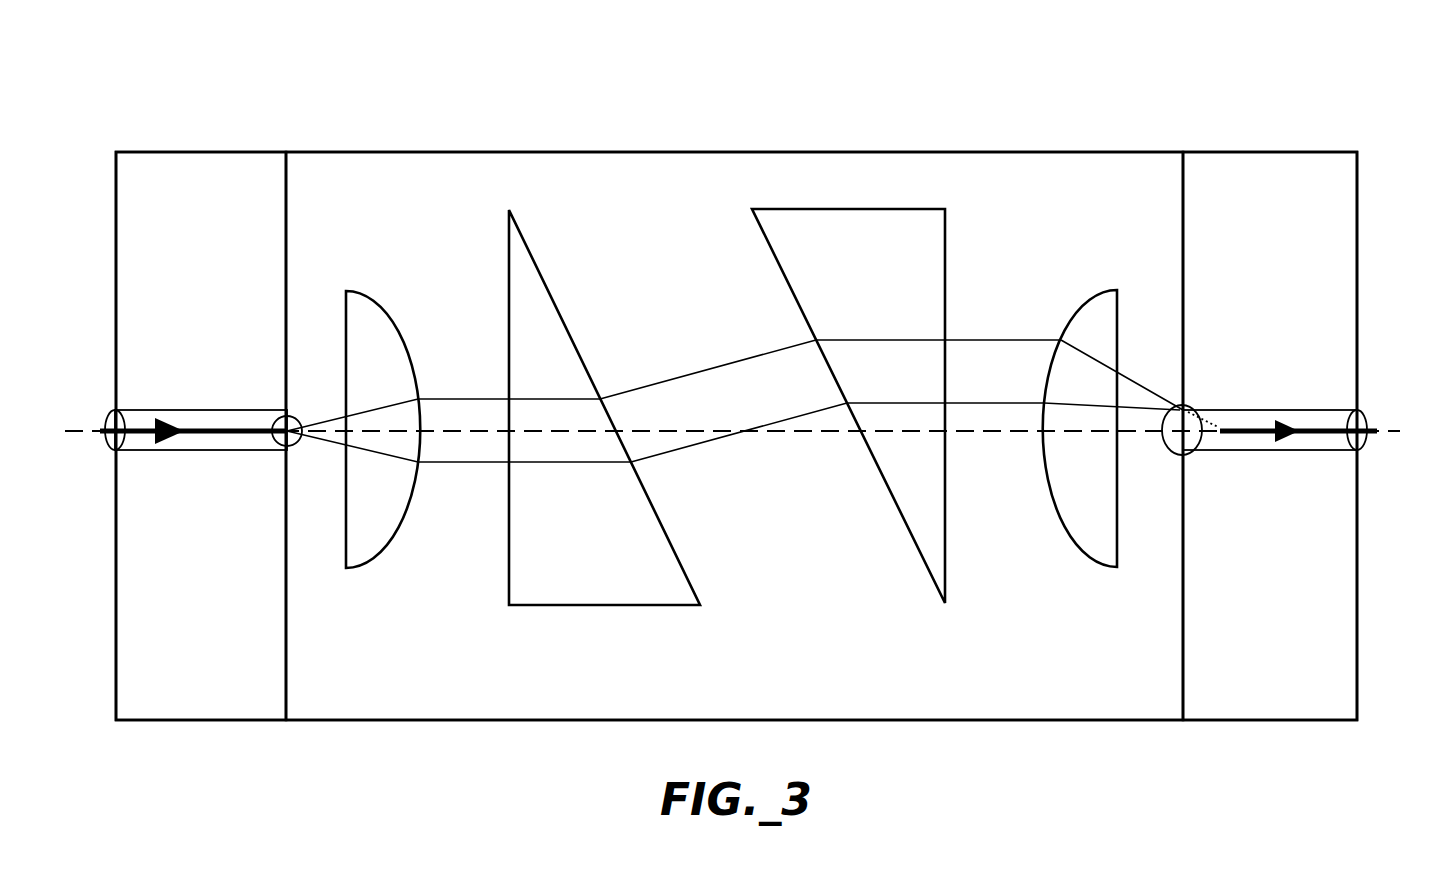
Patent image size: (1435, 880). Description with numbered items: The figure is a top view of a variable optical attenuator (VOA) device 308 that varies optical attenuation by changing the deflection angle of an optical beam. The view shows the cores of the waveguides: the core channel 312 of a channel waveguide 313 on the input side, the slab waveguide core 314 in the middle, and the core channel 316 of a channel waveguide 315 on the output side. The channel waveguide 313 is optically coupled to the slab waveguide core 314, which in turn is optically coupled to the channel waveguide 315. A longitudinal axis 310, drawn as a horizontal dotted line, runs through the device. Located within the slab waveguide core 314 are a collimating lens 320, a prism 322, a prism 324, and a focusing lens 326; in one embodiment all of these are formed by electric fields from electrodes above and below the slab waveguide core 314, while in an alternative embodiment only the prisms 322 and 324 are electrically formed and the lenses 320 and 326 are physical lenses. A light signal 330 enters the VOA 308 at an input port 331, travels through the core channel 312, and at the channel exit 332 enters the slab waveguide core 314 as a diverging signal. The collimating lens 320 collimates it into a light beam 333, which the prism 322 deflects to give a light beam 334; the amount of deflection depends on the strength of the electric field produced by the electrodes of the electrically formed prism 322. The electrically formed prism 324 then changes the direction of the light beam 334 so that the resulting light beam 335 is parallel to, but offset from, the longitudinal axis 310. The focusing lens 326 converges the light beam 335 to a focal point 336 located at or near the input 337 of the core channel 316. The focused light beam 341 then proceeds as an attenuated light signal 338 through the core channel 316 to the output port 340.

The variable optical attenuator (VOA) device 308 is at (1179, 54).
The longitudinal axis 310 is at (73, 433).
The core channel 312 is at (198, 418).
The channel waveguide 313 is at (223, 151).
The slab waveguide core 314 is at (860, 178).
The channel waveguide 315 is at (1286, 178).
The core channel 316 is at (1250, 413).
The collimating lens 320 is at (385, 345).
The prism 322 is at (556, 345).
The prism 324 is at (931, 278).
The focusing lens 326 is at (1101, 321).
The light signal 330 is at (232, 438).
The input port 331 is at (105, 408).
The channel exit 332 is at (290, 412).
The light beam 333 is at (442, 448).
The light beam 334 is at (697, 417).
The light beam 335 is at (979, 383).
The focal point 336 is at (1192, 408).
The input of core channel 337 is at (1162, 453).
The attenuated light signal 338 is at (1260, 433).
The output port 340 is at (1361, 422).
The focused light beam 341 is at (1138, 398).